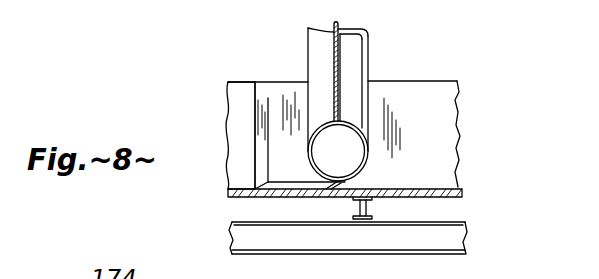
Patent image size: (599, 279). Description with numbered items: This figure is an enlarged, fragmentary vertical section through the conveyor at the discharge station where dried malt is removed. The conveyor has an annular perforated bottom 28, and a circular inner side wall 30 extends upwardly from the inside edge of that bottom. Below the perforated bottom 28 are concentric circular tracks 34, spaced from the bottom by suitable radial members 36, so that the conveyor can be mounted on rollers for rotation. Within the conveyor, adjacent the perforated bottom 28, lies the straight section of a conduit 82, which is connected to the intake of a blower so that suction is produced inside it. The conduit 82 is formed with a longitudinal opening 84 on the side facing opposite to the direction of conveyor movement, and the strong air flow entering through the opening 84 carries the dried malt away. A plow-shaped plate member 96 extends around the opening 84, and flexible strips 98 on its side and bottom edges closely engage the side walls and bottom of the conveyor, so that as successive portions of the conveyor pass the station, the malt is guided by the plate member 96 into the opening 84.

The perforated bottom 28 is at (395, 187).
The inner side wall 30 is at (413, 88).
The circular track 34 is at (402, 242).
The radial member 36 is at (370, 206).
The conduit 82 is at (362, 53).
The opening 84 is at (318, 148).
The plate member 96 is at (334, 47).
The flexible strip 98 is at (258, 86).